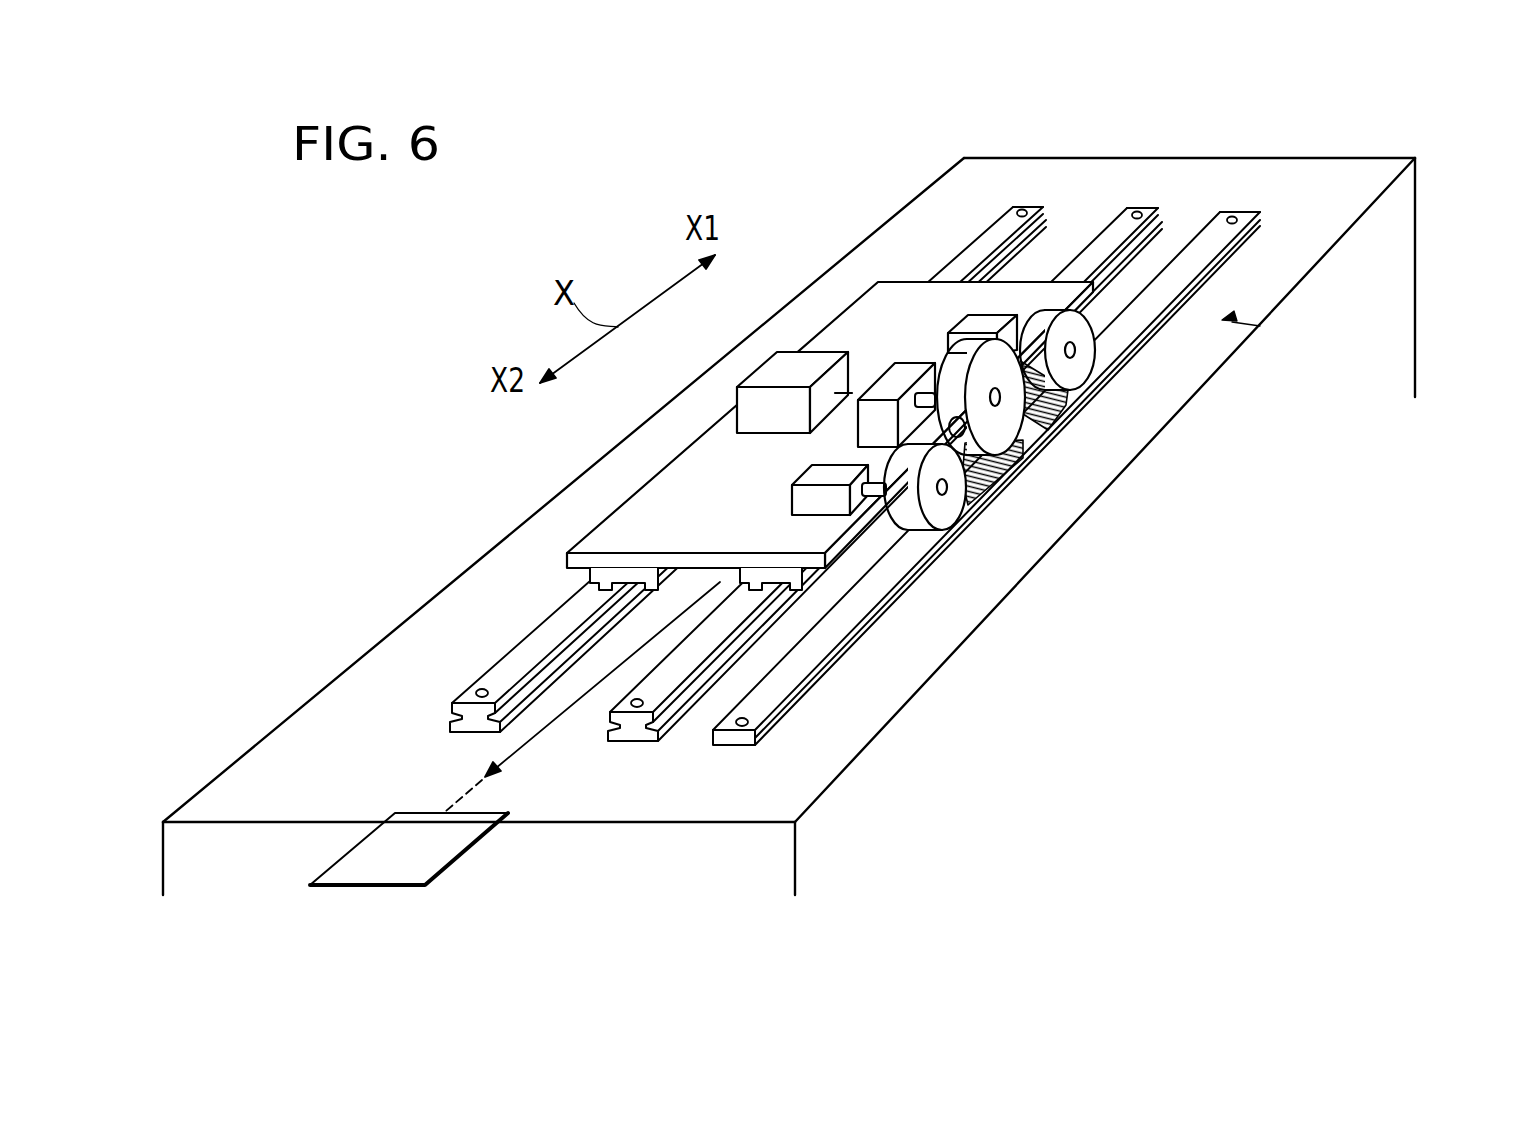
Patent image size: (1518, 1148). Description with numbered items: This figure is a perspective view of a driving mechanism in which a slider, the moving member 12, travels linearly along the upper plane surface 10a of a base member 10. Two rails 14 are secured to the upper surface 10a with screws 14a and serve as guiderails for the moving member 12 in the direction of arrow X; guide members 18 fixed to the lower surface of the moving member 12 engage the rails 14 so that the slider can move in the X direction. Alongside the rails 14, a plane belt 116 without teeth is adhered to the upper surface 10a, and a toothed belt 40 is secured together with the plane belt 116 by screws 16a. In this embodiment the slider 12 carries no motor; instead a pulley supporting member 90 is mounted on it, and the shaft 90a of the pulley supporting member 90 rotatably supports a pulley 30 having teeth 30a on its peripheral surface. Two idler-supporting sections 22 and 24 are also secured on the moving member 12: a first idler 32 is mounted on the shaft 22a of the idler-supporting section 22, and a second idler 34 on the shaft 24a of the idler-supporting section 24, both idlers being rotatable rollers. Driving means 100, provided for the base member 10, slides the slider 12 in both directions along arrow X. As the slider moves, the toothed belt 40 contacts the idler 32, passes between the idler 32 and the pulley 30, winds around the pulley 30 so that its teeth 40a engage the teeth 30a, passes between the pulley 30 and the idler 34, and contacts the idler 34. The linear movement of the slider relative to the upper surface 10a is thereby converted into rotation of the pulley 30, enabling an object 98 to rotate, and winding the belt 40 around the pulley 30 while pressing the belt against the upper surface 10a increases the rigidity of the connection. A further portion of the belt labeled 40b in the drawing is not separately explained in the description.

The base member 10 is at (1403, 307).
The upper plane surface 10a is at (1250, 325).
The moving member 12 is at (735, 470).
The rails 14 is at (452, 710).
The screws 14a is at (482, 690).
The plane belt 116 is at (705, 748).
The screws 16a is at (742, 726).
The guide members 18 is at (768, 572).
The idler-supporting section 22 is at (940, 531).
The shaft 22a is at (886, 513).
The idler-supporting section 24 is at (1000, 340).
The shaft 24a is at (1065, 245).
The pulley 30 is at (1012, 442).
The teeth 30a is at (975, 455).
The first idler 32 is at (832, 503).
The second idler 34 is at (1090, 351).
The toothed belt 40 is at (988, 333).
The teeth 40a is at (962, 425).
The belt teeth 40b is at (823, 650).
The pulley supporting member 90 is at (890, 396).
The shaft 90a is at (925, 396).
The object 98 is at (806, 372).
The driving means 100 is at (330, 888).